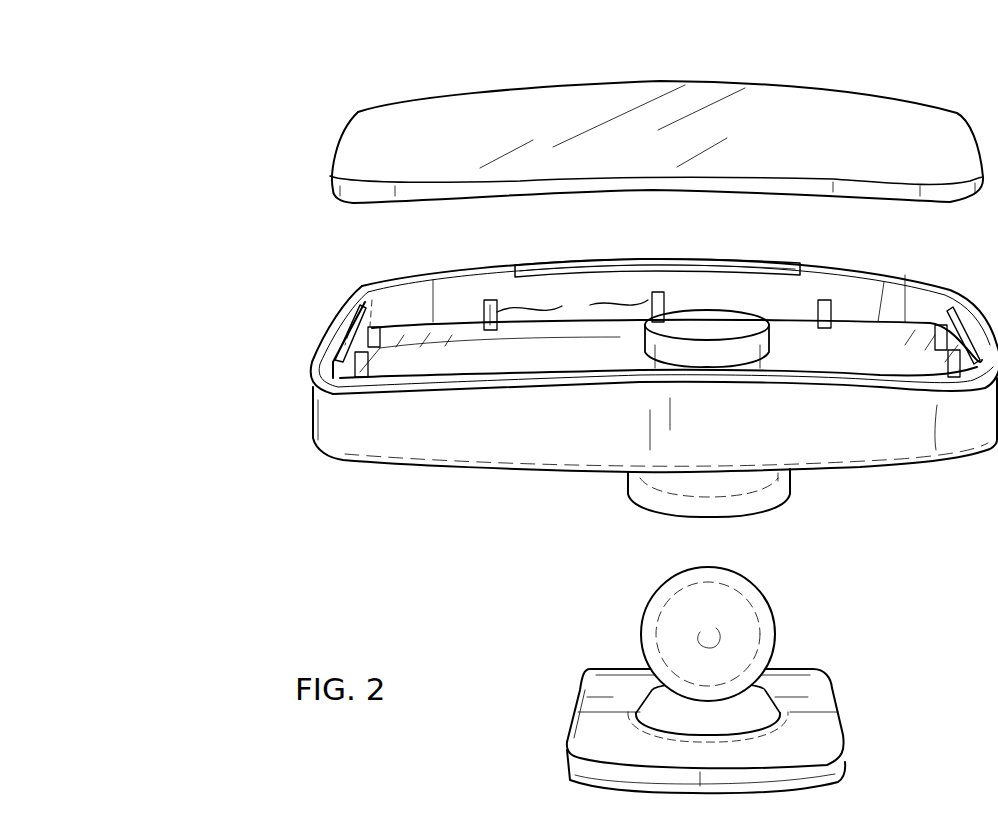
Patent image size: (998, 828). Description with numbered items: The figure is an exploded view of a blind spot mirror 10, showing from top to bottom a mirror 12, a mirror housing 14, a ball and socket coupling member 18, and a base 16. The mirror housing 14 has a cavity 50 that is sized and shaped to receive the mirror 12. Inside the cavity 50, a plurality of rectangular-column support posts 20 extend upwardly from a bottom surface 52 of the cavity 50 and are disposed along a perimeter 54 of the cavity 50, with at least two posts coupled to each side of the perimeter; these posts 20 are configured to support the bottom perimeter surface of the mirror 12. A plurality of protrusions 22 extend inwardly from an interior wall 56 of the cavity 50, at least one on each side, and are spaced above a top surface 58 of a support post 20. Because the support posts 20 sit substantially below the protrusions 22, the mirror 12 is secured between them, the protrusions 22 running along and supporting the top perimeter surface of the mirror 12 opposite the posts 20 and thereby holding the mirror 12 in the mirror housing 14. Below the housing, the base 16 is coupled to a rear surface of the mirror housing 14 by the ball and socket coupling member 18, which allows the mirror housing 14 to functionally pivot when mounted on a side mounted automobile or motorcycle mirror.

The blind spot mirror 10 is at (195, 150).
The mirror 12 is at (822, 107).
The mirror housing 14 is at (905, 450).
The base 16 is at (835, 735).
The ball and socket coupling member 18 is at (615, 597).
The rectangular-column support posts 20 is at (572, 305).
The protrusions 22 is at (628, 263).
The cavity 50 is at (901, 312).
The bottom surface 52 is at (525, 361).
The perimeter 54 is at (369, 274).
The interior wall 56 is at (782, 310).
The top surface 58 is at (489, 298).